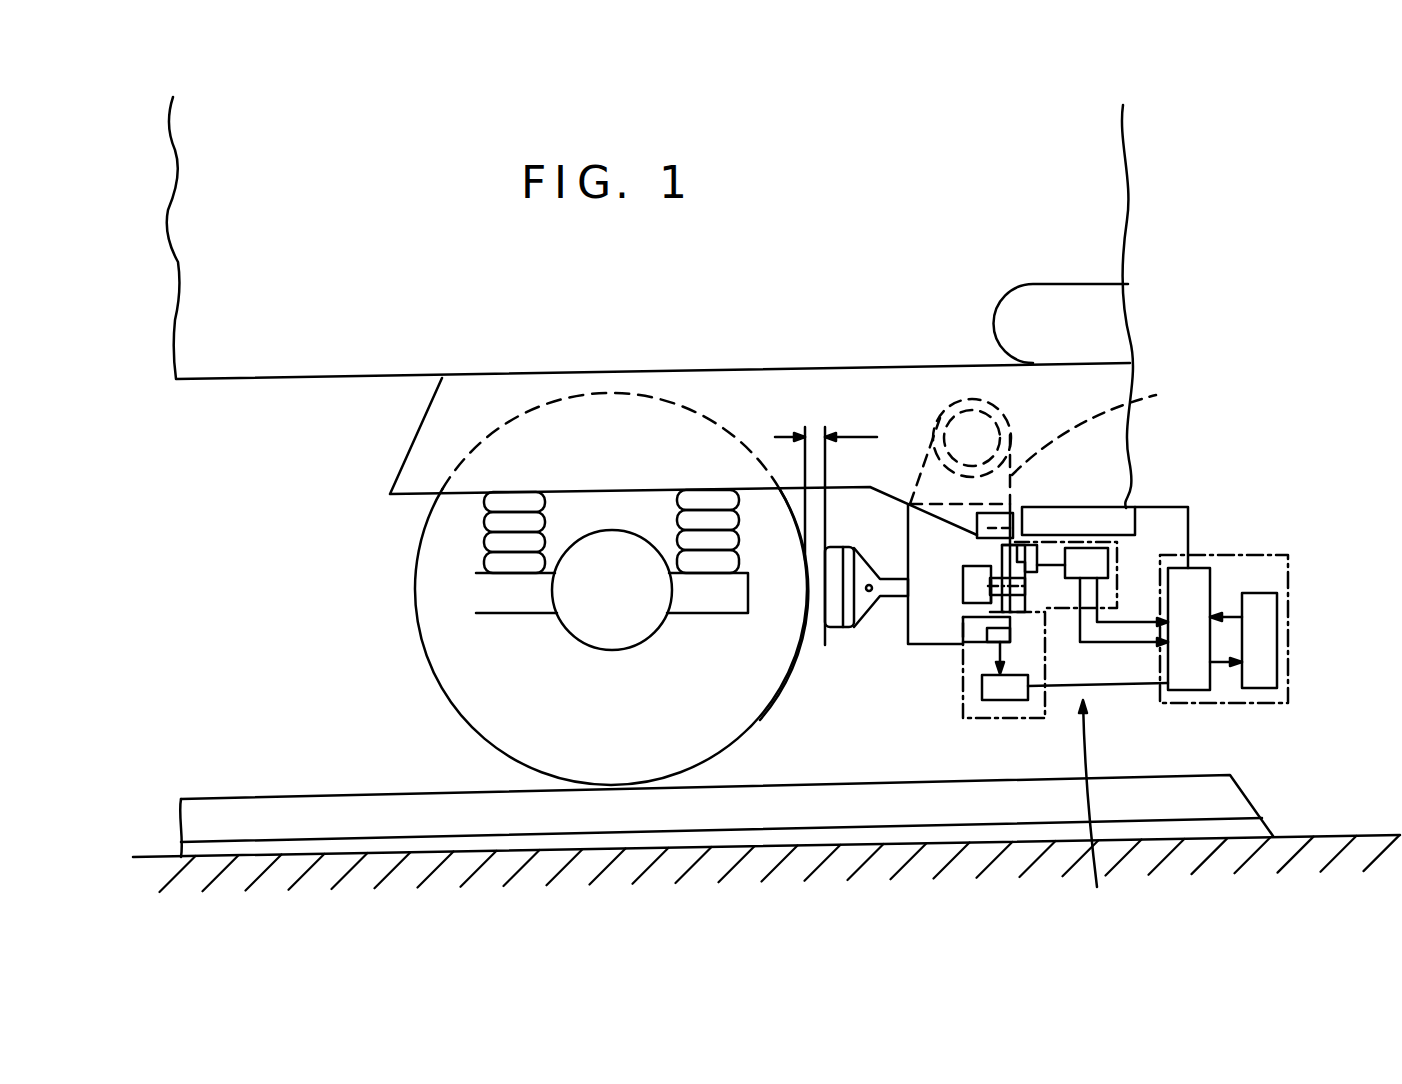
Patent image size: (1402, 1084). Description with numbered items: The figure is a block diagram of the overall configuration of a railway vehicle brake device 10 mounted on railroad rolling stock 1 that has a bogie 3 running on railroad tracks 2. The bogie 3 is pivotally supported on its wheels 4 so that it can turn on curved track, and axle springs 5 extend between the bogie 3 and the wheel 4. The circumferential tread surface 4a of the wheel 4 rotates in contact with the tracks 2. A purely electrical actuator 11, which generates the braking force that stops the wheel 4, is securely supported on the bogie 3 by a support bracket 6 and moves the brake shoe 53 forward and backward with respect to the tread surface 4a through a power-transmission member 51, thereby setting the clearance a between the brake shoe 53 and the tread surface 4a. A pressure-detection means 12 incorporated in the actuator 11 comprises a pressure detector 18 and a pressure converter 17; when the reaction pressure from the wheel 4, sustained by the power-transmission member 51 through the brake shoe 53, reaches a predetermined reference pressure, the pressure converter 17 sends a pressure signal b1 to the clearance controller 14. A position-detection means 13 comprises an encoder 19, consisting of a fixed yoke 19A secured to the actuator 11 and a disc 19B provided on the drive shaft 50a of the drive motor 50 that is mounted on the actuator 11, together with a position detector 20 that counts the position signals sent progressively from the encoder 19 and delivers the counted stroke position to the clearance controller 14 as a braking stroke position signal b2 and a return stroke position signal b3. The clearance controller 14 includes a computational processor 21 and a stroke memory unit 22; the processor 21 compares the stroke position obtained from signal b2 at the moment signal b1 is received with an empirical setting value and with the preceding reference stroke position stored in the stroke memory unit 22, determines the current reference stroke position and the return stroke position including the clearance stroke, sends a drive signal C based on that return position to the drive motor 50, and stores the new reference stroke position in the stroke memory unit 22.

The railroad rolling stock 1 is at (1066, 255).
The railroad tracks 2 is at (292, 820).
The bogie 3 is at (1081, 458).
The wheel 4 is at (455, 665).
The tread surface 4a is at (776, 699).
The axle springs 5 is at (492, 542).
The support bracket 6 is at (1094, 423).
The brake device 10 is at (1097, 816).
The actuator 11 is at (920, 610).
The pressure-detection means 12 is at (976, 692).
The position-detection means 13 is at (1196, 642).
The clearance controller 14 is at (1271, 634).
The pressure converter 17 is at (962, 624).
The pressure detector 18 is at (990, 688).
The encoder 19 is at (1043, 553).
The fixed yoke 19A is at (1023, 535).
The disc 19B is at (1026, 596).
The position detector 20 is at (1110, 572).
The computational processor 21 is at (1195, 668).
The stroke memory unit 22 is at (1262, 630).
The drive motor 50 is at (965, 580).
The drive shaft 50a is at (990, 592).
The power-transmission member 51 is at (889, 580).
The brake shoe 53 is at (833, 625).
The clearance a is at (826, 524).
The pressure signal b1 is at (1133, 683).
The braking stroke position signal b2 is at (1117, 642).
The return stroke position signal b3 is at (1138, 622).
The drive signal C is at (1190, 512).